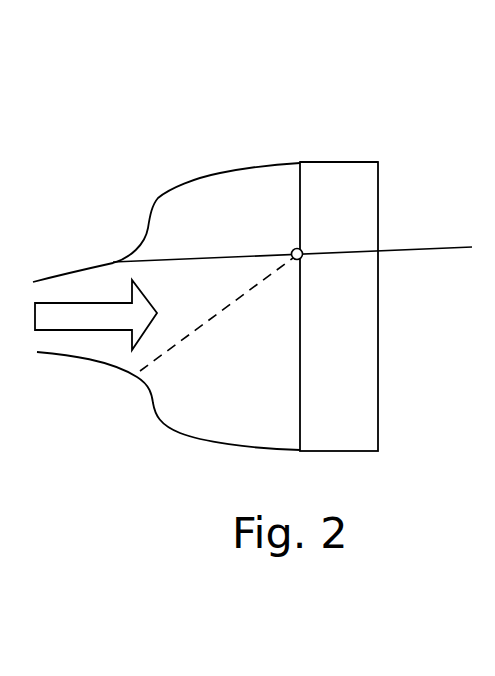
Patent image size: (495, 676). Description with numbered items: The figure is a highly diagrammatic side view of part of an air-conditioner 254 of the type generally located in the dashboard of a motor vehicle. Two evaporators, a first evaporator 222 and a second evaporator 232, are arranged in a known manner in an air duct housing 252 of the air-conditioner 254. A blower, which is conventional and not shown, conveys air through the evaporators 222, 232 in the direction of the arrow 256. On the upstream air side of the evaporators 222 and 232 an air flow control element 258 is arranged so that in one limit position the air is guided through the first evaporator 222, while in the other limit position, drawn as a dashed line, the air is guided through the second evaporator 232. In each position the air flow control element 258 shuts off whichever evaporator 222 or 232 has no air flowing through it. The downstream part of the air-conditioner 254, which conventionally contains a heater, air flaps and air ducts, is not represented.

The first evaporator 222 is at (358, 358).
The second evaporator 232 is at (358, 205).
The air duct housing 252 is at (245, 168).
The air-conditioner 254 is at (353, 124).
The arrow 256 is at (75, 318).
The air flow control element 258 is at (172, 260).